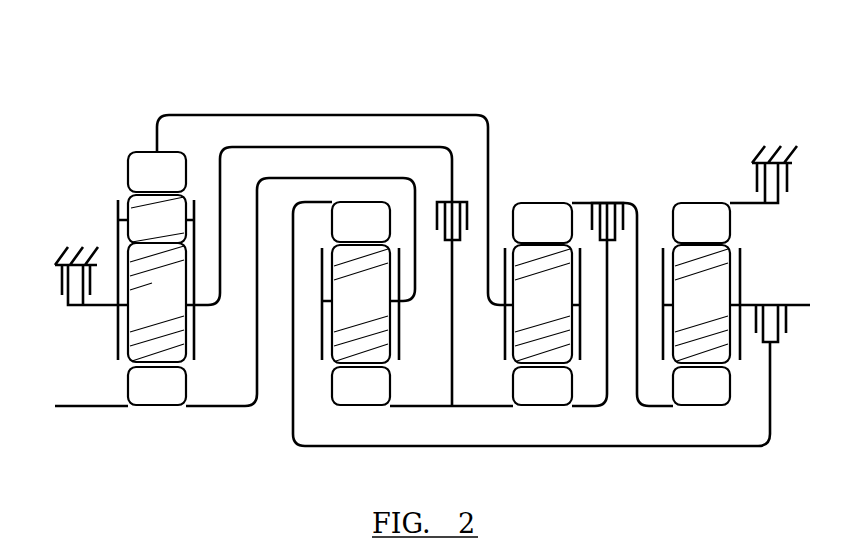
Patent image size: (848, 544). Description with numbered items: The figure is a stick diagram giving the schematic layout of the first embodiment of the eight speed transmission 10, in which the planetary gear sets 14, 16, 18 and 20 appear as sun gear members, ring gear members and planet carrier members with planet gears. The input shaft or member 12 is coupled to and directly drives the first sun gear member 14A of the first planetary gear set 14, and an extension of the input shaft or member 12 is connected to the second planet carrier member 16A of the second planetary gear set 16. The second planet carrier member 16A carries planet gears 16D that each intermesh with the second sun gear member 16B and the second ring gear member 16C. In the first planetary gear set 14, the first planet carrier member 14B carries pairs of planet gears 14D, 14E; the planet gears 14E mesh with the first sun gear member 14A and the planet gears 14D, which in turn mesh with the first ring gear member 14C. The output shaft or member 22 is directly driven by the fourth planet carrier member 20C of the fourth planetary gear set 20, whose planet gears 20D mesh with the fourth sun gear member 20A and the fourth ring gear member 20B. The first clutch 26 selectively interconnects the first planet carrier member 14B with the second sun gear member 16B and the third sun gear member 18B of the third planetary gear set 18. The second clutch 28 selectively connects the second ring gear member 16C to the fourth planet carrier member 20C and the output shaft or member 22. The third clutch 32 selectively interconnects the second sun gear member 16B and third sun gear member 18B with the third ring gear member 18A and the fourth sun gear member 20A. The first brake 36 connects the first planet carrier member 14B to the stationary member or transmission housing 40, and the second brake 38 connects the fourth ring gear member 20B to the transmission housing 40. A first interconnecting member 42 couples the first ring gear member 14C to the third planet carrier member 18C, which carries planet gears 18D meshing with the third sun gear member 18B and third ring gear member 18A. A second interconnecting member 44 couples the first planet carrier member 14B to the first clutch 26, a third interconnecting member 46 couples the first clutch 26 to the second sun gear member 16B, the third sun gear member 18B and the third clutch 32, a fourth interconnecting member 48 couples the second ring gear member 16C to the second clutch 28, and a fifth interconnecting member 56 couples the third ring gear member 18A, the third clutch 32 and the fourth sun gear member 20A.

The eight speed transmission 10 is at (556, 75).
The input shaft or member 12 is at (213, 408).
The first planetary gear set 14 is at (134, 331).
The first sun gear member 14A is at (138, 397).
The first planet carrier member 14B is at (117, 216).
The first ring gear member 14C is at (138, 187).
The planet gears 14D is at (138, 236).
The planet gears 14E is at (138, 314).
The second planetary gear set 16 is at (340, 367).
The second planet carrier member 16A is at (322, 352).
The second sun gear member 16B is at (342, 397).
The second ring gear member 16C is at (342, 237).
The planet gears 16D is at (342, 313).
The third planetary gear set 18 is at (533, 360).
The third ring gear member 18A is at (523, 237).
The third sun gear member 18B is at (523, 397).
The third planet carrier member 18C is at (503, 338).
The planet gears 18D is at (523, 313).
The fourth planetary gear set 20 is at (734, 355).
The fourth sun gear member 20A is at (682, 397).
The fourth ring gear member 20B is at (682, 237).
The fourth planet carrier member 20C is at (744, 268).
The planet gears 20D is at (682, 313).
The output shaft or member 22 is at (806, 308).
The first clutch 26 is at (456, 202).
The second clutch 28 is at (766, 345).
The third clutch 32 is at (603, 203).
The first brake 36 is at (62, 291).
The second brake 38 is at (757, 182).
The transmission housing 40 is at (80, 248).
The first interconnecting member 42 is at (211, 115).
The second interconnecting member 44 is at (392, 147).
The third interconnecting member 46 is at (490, 408).
The fourth interconnecting member 48 is at (348, 448).
The fifth interconnecting member 56 is at (640, 229).